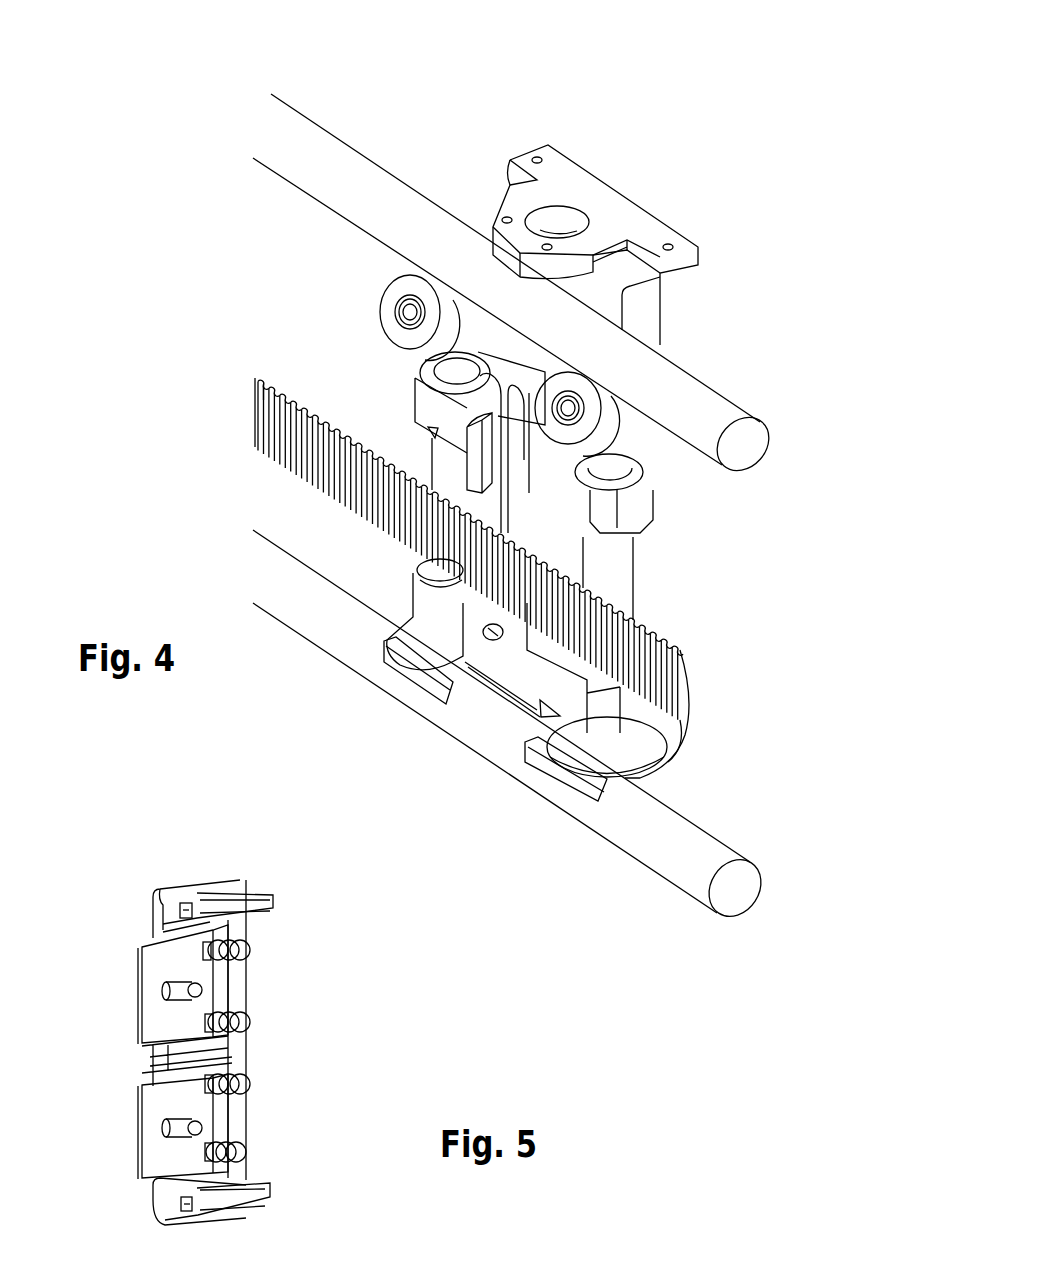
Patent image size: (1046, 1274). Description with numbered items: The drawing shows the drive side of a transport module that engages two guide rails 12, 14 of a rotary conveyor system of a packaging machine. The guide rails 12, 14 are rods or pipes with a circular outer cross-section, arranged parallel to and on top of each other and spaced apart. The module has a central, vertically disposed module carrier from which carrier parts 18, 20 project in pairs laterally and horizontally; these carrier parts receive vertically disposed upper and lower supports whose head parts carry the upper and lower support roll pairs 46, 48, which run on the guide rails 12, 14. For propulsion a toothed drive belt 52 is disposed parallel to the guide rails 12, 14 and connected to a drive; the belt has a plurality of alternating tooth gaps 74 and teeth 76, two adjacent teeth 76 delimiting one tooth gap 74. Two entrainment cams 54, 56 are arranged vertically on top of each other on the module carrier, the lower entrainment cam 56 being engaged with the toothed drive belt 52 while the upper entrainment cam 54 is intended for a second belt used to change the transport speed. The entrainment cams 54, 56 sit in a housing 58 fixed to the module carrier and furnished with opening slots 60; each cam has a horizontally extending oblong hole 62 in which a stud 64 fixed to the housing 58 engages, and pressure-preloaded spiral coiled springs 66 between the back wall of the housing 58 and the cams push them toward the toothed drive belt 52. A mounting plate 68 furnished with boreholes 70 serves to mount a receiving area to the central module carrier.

In FIG. 4, the guide rail 12 is at (340, 153).
In FIG. 4, the guide rail 14 is at (473, 725).
In FIG. 4, the carrier part 18 is at (425, 403).
In FIG. 4, the carrier part 20 is at (433, 610).
In FIG. 4, the upper support roll pair 46 is at (603, 418).
In FIG. 4, the lower support roll pair 48 is at (647, 770).
In FIG. 4, the toothed drive belt 52 is at (422, 550).
In FIG. 4, the upper entrainment cam 54 is at (490, 465).
In FIG. 5, the upper entrainment cam 54 is at (160, 965).
In FIG. 4, the lower entrainment cam 56 is at (530, 507).
In FIG. 5, the lower entrainment cam 56 is at (163, 1155).
In FIG. 4, the housing 58 is at (512, 498).
In FIG. 5, the housing 58 is at (185, 885).
In FIG. 5, the opening slots 60 is at (178, 1047).
In FIG. 5, the oblong hole 62 is at (173, 988).
In FIG. 5, the stud 64 is at (197, 988).
In FIG. 5, the spiral coiled springs 66 is at (245, 948).
In FIG. 4, the mounting plate 68 is at (632, 218).
In FIG. 4, the boreholes 70 is at (539, 157).
In FIG. 4, the tooth gaps 74 is at (275, 447).
In FIG. 4, the teeth 76 is at (273, 452).